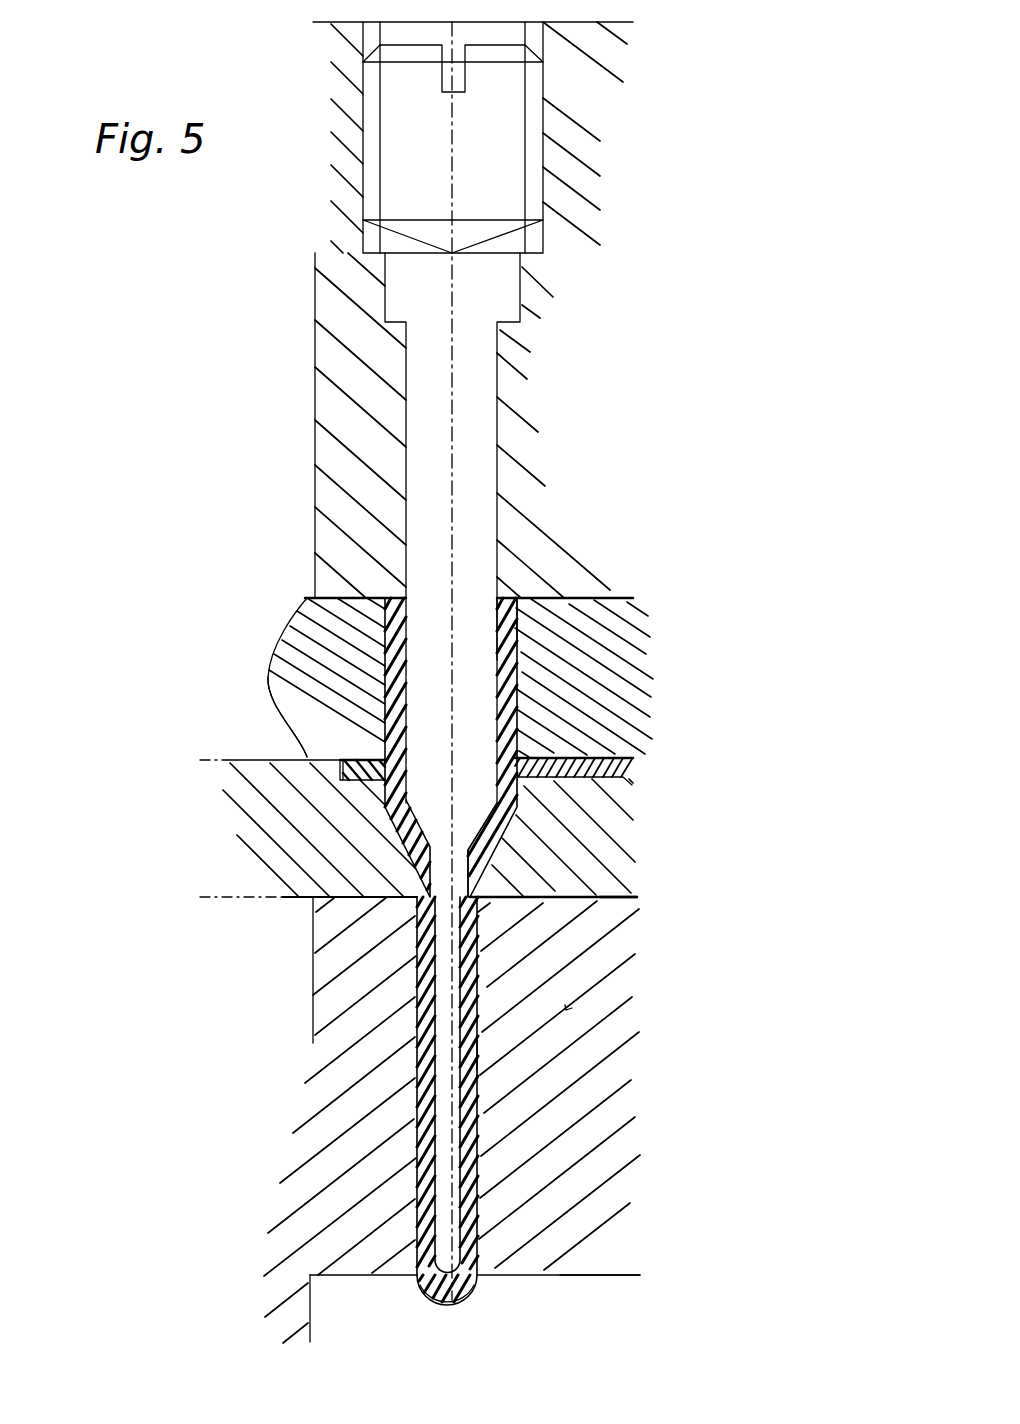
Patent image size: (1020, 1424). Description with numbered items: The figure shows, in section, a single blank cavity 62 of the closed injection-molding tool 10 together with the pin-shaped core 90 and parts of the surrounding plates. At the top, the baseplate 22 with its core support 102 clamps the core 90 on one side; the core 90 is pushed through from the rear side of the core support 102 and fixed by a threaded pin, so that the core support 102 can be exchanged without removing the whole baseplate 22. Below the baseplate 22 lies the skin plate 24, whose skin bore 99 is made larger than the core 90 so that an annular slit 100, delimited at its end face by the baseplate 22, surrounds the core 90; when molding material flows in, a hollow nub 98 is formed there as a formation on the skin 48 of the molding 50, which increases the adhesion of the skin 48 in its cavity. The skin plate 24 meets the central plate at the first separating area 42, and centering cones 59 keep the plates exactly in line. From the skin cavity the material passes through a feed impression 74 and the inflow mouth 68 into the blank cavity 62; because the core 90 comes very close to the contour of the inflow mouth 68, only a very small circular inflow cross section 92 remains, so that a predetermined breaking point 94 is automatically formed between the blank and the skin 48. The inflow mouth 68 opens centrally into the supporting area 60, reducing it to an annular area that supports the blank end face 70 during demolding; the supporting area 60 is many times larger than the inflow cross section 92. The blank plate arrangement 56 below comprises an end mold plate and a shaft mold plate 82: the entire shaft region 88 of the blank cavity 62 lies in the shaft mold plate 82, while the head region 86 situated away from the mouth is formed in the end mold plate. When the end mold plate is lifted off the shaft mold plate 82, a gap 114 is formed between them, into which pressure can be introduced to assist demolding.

The injection-molding tool 10 is at (674, 230).
The baseplate 22 is at (563, 512).
The core support 102 is at (563, 512).
The pin-shaped core 90 is at (477, 400).
The skin bore 99 is at (505, 620).
The annular slit 100 is at (505, 638).
The hollow nub 98 is at (500, 688).
The skin plate 24 is at (595, 695).
The skin 48 is at (635, 762).
The molding 50 is at (635, 762).
The feed impression 74 is at (393, 840).
The supporting area 60 is at (470, 895).
The inflow cross section 92 is at (487, 877).
The centering cone 59 is at (637, 895).
The inflow mouth 68 is at (338, 896).
The blank end face 70 is at (403, 900).
The predetermined breaking point 94 is at (470, 897).
The shaft mold plate 82 is at (352, 1090).
The blank plate arrangement 56 is at (575, 1193).
The blank cavity 62 is at (480, 1100).
The shaft region 88 is at (478, 1055).
The head region 86 is at (475, 1297).
The gap 114 is at (347, 1297).
The first separating area 42 is at (282, 758).